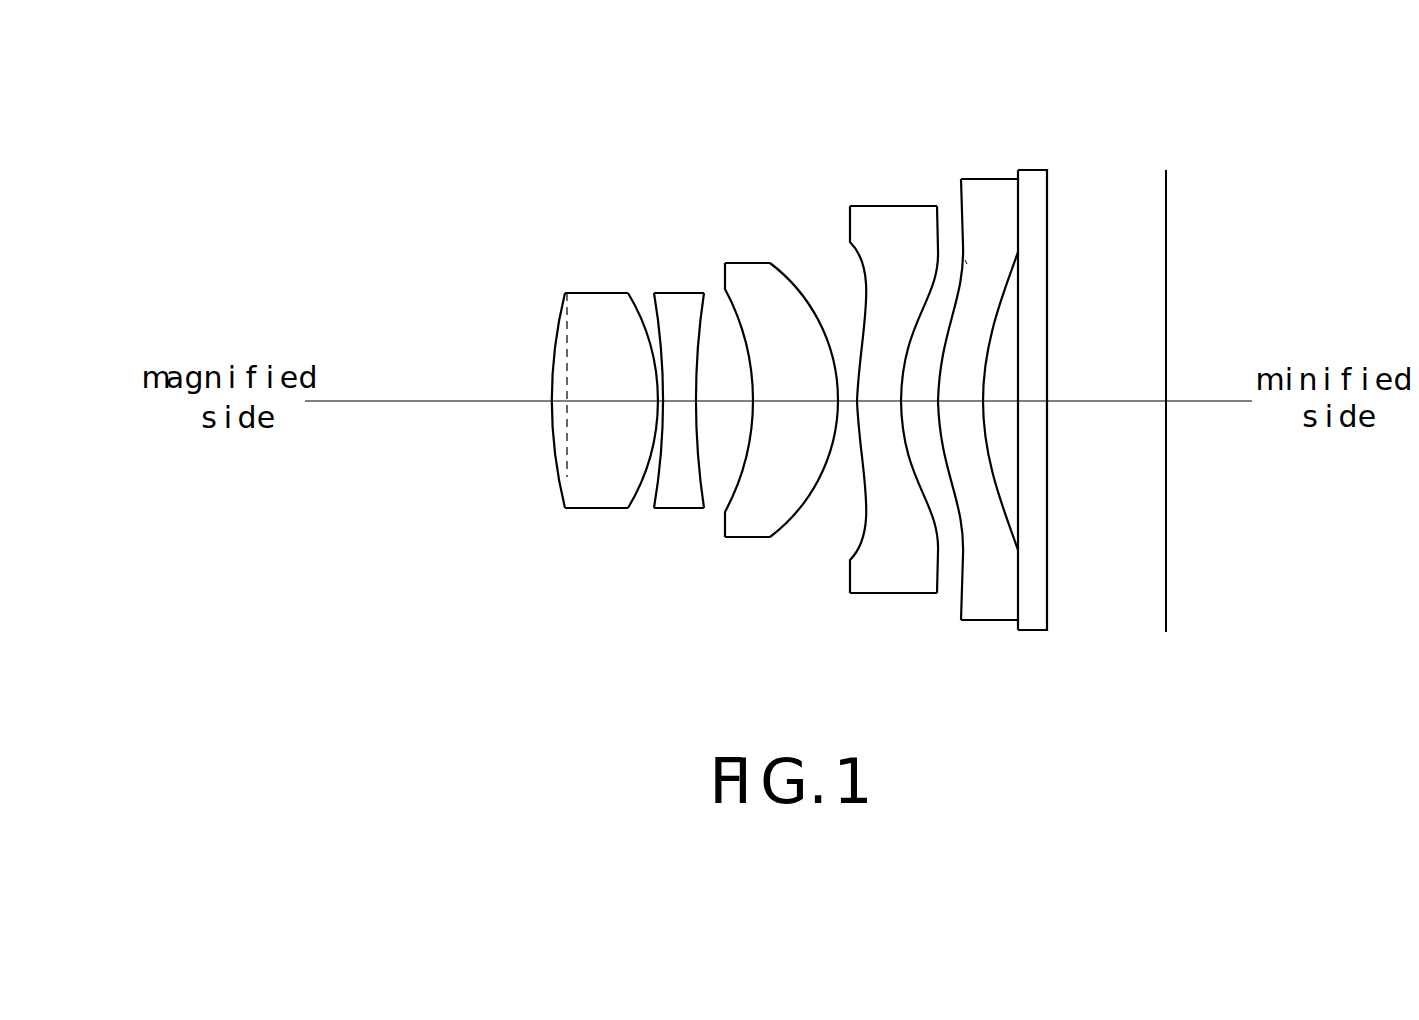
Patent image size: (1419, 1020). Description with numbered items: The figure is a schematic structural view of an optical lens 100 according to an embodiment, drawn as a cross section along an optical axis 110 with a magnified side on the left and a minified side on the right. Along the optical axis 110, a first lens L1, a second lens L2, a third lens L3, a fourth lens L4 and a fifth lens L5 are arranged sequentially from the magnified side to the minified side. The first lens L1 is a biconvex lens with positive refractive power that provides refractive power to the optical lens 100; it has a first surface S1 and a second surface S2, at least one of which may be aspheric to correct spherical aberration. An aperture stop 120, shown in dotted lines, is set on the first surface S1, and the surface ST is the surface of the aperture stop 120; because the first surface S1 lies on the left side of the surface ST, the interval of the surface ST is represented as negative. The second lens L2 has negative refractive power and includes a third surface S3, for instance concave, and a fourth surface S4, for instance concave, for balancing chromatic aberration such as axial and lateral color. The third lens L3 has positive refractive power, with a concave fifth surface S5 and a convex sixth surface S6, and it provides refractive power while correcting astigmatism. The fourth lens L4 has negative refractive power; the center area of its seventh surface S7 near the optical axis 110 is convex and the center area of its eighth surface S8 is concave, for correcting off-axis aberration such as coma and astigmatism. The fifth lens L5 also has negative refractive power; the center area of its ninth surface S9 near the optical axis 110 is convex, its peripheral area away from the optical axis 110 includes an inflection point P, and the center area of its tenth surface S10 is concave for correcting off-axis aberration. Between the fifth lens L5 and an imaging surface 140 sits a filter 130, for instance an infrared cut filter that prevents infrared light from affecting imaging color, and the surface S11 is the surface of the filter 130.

The optical lens 100 is at (872, 395).
The optical axis 110 is at (402, 400).
The aperture stop 120 is at (539, 388).
The filter 130 is at (1078, 345).
The imaging surface 140 is at (1168, 231).
The inflection point P is at (967, 262).
The first lens L1 is at (553, 435).
The second lens L2 is at (667, 415).
The third lens L3 is at (765, 407).
The fourth lens L4 is at (879, 408).
The fifth lens L5 is at (1039, 366).
The surface of the aperture stop ST is at (565, 437).
The first surface S1 is at (550, 405).
The second surface S2 is at (636, 496).
The third surface S3 is at (655, 492).
The fourth surface S4 is at (703, 488).
The fifth surface S5 is at (735, 486).
The sixth surface S6 is at (785, 527).
The seventh surface S7 is at (857, 538).
The eighth surface S8 is at (943, 563).
The ninth surface S9 is at (957, 566).
The tenth surface S10 is at (987, 432).
The surface of the filter S11 is at (1017, 452).